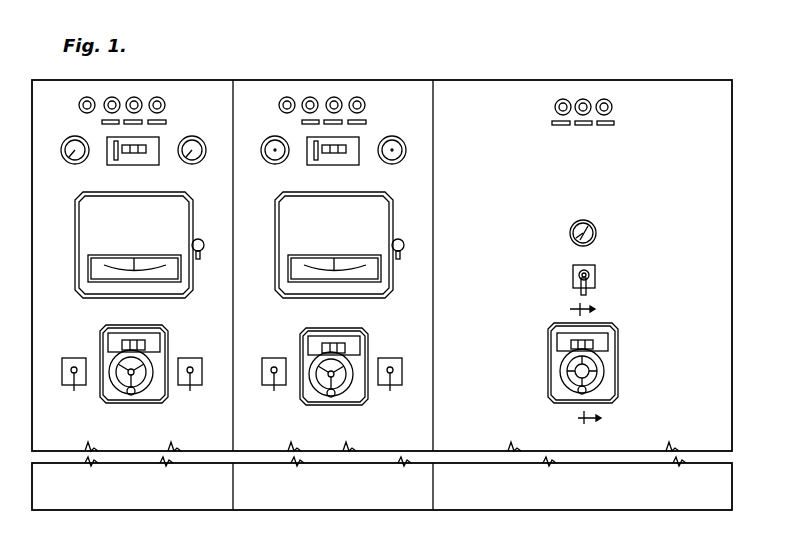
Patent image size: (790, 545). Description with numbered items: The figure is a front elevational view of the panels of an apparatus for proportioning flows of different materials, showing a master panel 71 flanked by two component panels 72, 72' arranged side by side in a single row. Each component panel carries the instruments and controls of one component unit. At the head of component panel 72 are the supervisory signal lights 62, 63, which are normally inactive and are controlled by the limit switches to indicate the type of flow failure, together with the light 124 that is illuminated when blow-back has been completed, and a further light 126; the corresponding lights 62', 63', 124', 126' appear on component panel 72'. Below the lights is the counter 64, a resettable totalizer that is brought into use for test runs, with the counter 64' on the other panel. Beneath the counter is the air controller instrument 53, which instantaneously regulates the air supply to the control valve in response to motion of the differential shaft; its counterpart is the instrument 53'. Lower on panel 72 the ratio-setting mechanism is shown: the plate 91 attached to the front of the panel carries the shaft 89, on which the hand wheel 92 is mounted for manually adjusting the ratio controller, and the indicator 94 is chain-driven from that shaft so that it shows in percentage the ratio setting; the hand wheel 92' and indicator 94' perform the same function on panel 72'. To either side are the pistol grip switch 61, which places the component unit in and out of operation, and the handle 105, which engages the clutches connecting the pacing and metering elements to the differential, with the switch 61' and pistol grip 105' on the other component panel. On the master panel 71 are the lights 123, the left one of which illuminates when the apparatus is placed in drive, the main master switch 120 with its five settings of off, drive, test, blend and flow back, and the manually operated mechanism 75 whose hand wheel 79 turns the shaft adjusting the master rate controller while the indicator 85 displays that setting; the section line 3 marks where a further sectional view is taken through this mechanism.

The section line 3- 3 is at (576, 364).
The air controller instrument 53 is at (339, 233).
The air controller instrument 53' is at (148, 233).
The manually operable switch 61 is at (269, 358).
The switch 61' is at (69, 358).
The light 62 is at (349, 88).
The supervisory signal light 62' is at (153, 88).
The light 63 is at (378, 105).
The supervisory signal light 63' is at (180, 105).
The counter 64 is at (332, 163).
The totalizer 64' is at (129, 164).
The master panel 71 is at (732, 384).
The component panel 72 is at (382, 497).
The component panel 72' is at (77, 517).
The manually operated mechanism 75 is at (572, 358).
The hand wheel 79 is at (600, 376).
The indicator 85 is at (598, 342).
The shaft 89 is at (342, 395).
The plate 91 is at (305, 392).
The hand wheel 92 is at (324, 395).
The hand wheel 92' is at (143, 368).
The indicator 94 is at (344, 327).
The indicator 94' is at (157, 327).
The handle 105 is at (397, 388).
The pistol grip 105' is at (197, 388).
The main master switch 120 is at (596, 273).
The light 123 is at (584, 99).
The light 124 is at (315, 88).
The light 124' is at (116, 88).
The signal lamp 126 is at (271, 114).
The signal lamp 126' is at (70, 114).